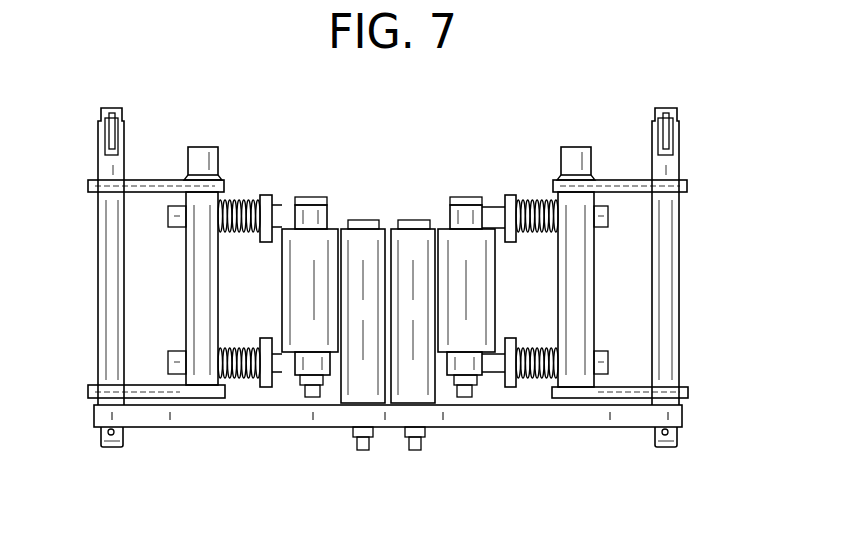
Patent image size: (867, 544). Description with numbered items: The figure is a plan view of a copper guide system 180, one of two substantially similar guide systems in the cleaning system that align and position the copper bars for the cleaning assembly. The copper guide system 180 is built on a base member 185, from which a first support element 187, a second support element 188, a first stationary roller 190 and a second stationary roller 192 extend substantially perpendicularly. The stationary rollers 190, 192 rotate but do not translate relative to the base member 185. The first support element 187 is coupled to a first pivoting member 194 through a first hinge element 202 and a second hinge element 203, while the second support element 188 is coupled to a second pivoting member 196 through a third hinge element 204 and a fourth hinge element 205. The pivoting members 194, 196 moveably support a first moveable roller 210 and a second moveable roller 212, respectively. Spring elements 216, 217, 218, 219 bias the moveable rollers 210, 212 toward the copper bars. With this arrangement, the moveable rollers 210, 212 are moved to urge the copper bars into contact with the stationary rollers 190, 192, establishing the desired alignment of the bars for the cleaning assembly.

The copper guide system 180 is at (740, 334).
The base member 185 is at (626, 419).
The first support element 187 is at (93, 278).
The second support element 188 is at (682, 220).
The first stationary roller 190 is at (358, 239).
The second stationary roller 192 is at (401, 242).
The first pivoting member 194 is at (177, 260).
The second pivoting member 196 is at (590, 302).
The first hinge element 202 is at (140, 181).
The second hinge element 203 is at (152, 394).
The third hinge element 204 is at (623, 181).
The fourth hinge element 205 is at (635, 387).
The first moveable roller 210 is at (293, 243).
The second moveable roller 212 is at (470, 242).
The spring element 216 is at (233, 199).
The spring element 217 is at (250, 378).
The spring element 218 is at (527, 199).
The spring element 219 is at (538, 379).